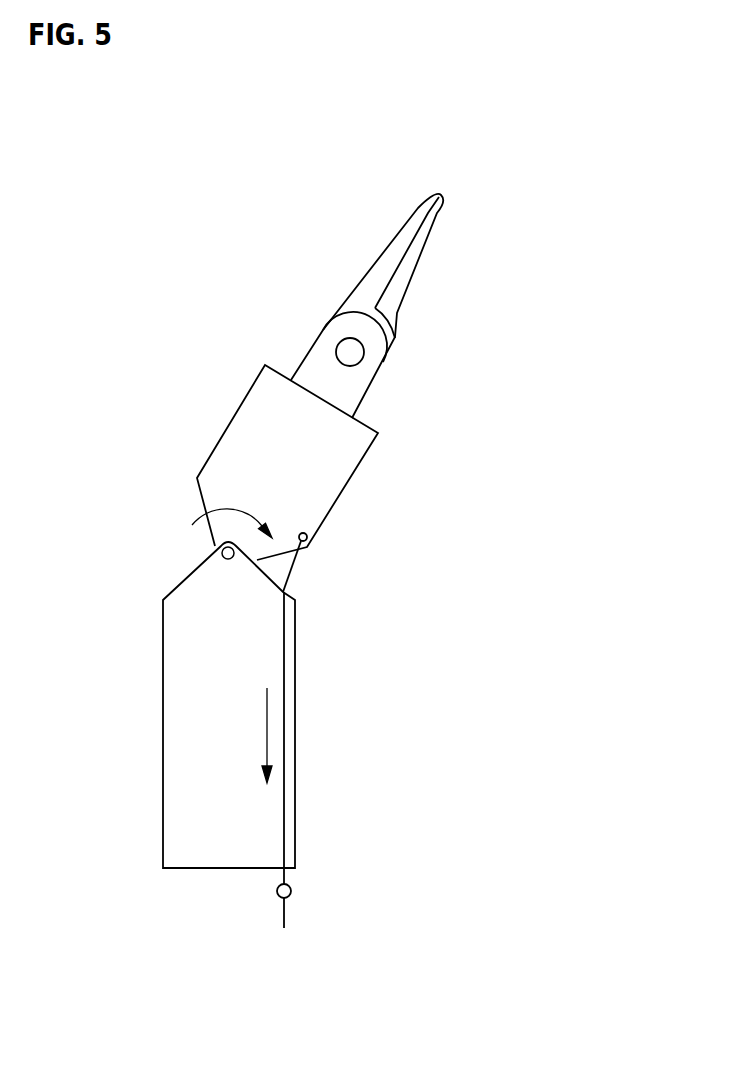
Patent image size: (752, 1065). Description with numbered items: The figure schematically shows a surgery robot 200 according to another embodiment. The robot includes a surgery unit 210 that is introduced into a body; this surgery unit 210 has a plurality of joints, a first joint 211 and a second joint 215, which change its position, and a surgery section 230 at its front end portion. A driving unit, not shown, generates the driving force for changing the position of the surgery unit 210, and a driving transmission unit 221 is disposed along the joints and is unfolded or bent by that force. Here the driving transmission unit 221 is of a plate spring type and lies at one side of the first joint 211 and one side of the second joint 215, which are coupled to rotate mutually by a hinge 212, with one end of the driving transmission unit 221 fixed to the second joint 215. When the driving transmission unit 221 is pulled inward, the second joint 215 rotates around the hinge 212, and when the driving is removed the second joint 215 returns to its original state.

The surgery robot 200 is at (308, 140).
The surgery unit 210 is at (523, 513).
The first joint 211 is at (295, 690).
The hinge 212 is at (222, 556).
The second joint 215 is at (345, 487).
The driving transmission unit 221 is at (284, 798).
The surgery section 230 is at (428, 292).